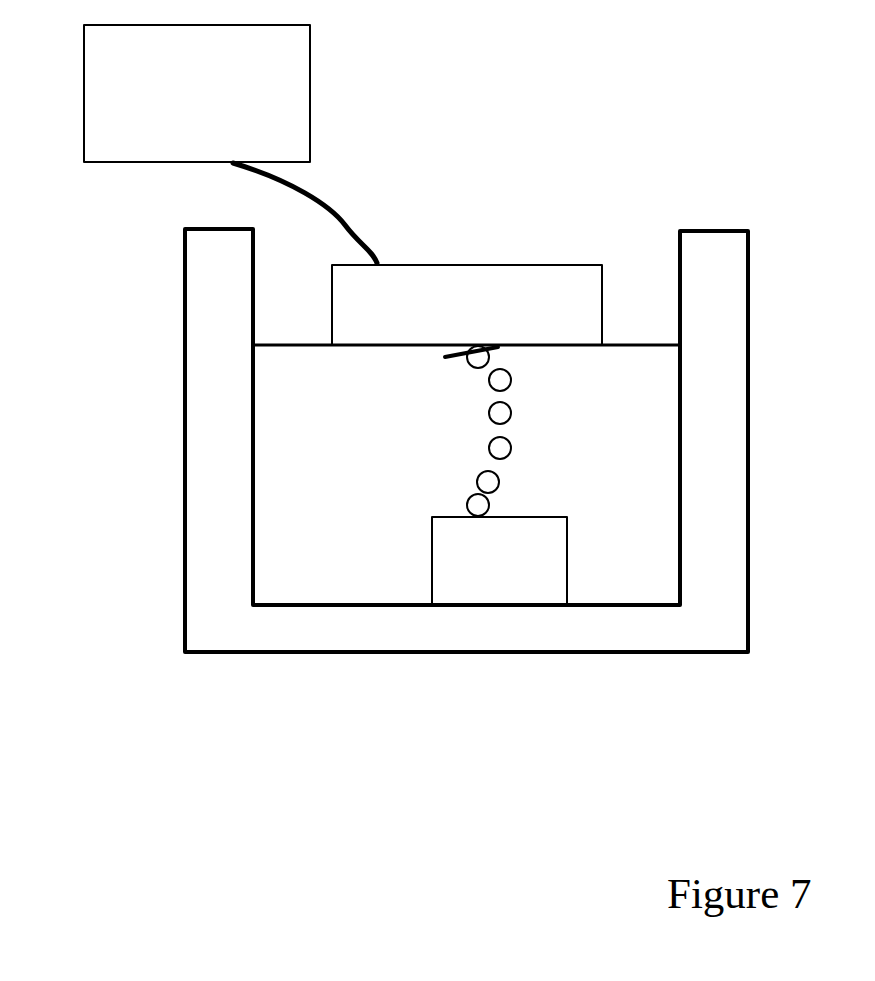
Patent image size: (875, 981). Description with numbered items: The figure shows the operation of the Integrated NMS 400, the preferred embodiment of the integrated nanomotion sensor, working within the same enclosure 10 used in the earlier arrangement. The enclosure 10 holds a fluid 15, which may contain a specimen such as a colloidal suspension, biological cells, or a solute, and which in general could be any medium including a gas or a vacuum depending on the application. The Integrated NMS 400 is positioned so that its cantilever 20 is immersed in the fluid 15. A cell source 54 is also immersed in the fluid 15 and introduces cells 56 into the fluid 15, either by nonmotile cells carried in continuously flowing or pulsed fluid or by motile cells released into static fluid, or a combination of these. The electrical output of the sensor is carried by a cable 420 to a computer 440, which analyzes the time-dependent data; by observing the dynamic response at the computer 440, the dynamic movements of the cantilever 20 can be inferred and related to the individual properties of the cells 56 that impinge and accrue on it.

The enclosure 10 is at (725, 403).
The fluid 15 is at (393, 438).
The cantilever 20 is at (546, 260).
The Integrated NMS 400 is at (477, 343).
The cable 420 is at (332, 218).
The computer 440 is at (300, 103).
The cell source 54 is at (512, 616).
The cells 56 is at (386, 535).